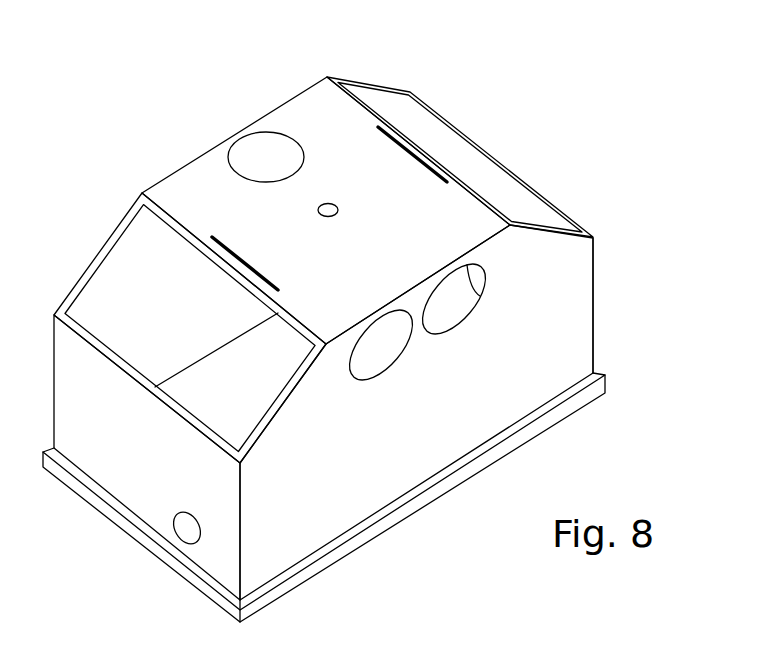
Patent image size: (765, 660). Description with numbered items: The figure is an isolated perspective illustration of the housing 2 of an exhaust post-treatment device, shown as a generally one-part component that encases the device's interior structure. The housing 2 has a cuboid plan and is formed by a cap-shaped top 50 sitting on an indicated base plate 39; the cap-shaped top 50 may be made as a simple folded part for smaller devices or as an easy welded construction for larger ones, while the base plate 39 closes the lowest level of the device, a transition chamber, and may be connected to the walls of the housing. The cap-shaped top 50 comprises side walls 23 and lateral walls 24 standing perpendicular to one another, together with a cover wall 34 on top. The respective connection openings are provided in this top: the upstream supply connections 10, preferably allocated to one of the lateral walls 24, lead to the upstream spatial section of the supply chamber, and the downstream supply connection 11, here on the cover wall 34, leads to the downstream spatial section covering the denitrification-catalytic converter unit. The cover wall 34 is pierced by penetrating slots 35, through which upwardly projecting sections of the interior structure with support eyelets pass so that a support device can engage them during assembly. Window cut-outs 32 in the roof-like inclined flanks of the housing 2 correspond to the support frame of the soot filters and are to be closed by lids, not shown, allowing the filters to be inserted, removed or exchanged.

The housing 2 is at (347, 320).
The upstream supply connections 10 is at (385, 348).
The downstream supply connection 11 is at (280, 168).
The side walls 23 is at (112, 502).
The lateral walls 24 is at (167, 266).
The window cut-outs 32 is at (484, 172).
The cover wall 34 is at (439, 234).
The penetrating slots 35 is at (252, 263).
The base plate 39 is at (550, 420).
The cap-shaped top 50 is at (593, 292).